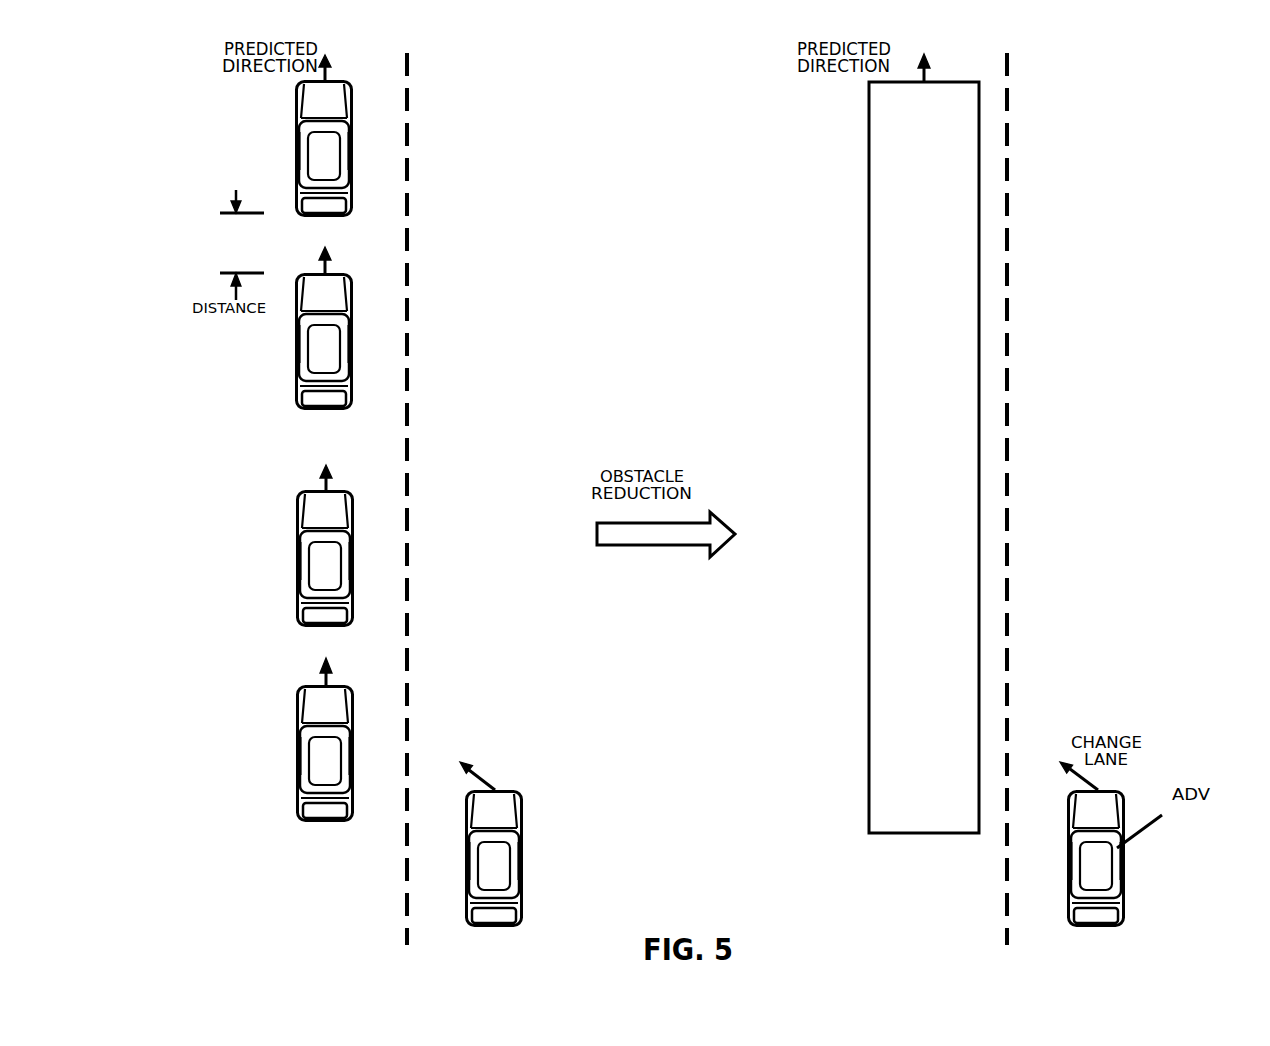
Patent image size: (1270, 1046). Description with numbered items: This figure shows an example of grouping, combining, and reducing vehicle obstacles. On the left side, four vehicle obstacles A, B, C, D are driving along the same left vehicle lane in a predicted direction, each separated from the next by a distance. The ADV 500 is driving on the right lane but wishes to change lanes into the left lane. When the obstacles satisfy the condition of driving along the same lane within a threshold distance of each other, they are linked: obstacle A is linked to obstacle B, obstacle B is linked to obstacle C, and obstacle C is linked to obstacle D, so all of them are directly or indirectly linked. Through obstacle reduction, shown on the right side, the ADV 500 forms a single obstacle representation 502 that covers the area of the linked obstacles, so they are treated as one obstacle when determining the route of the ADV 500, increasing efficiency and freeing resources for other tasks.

The ADV 500 is at (518, 848).
The obstacle representation 502 is at (869, 418).
The obstacle A is at (324, 135).
The obstacle B is at (324, 328).
The obstacle C is at (325, 545).
The obstacle D is at (325, 739).